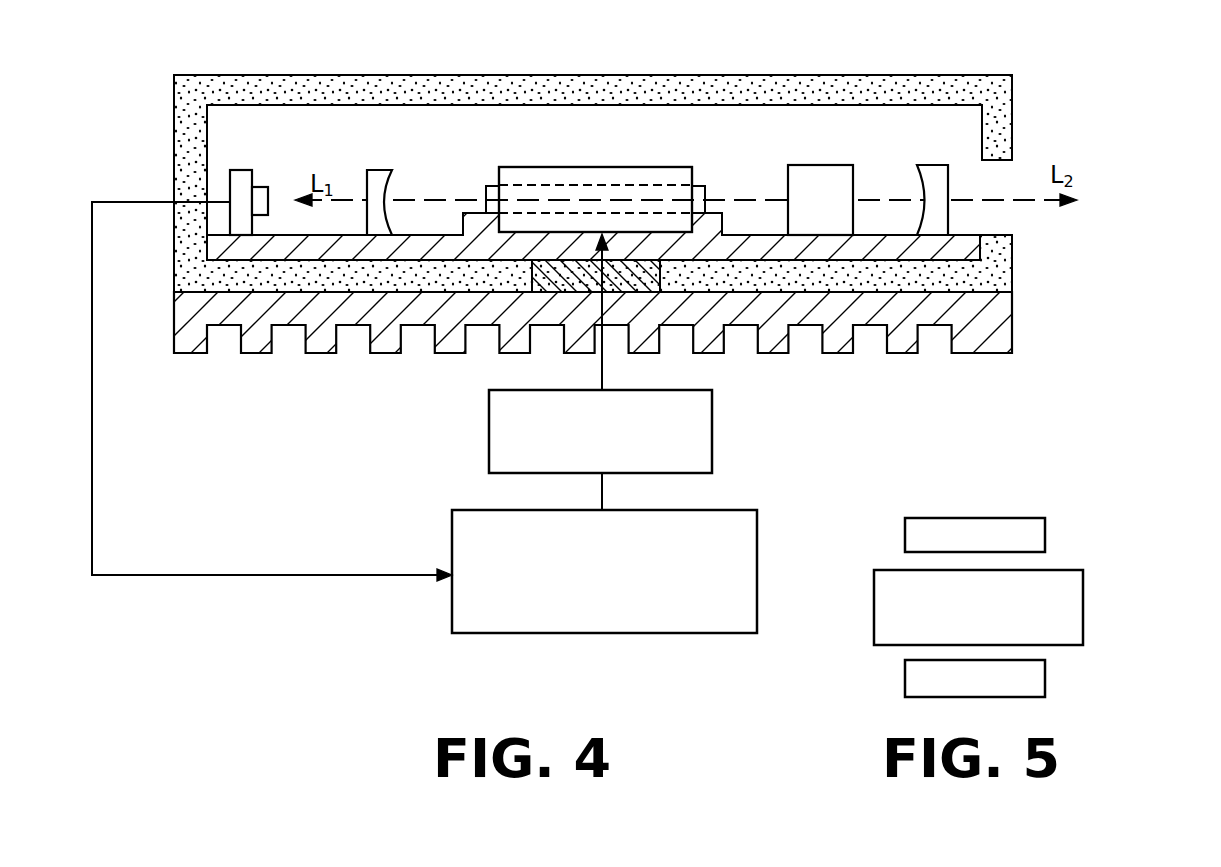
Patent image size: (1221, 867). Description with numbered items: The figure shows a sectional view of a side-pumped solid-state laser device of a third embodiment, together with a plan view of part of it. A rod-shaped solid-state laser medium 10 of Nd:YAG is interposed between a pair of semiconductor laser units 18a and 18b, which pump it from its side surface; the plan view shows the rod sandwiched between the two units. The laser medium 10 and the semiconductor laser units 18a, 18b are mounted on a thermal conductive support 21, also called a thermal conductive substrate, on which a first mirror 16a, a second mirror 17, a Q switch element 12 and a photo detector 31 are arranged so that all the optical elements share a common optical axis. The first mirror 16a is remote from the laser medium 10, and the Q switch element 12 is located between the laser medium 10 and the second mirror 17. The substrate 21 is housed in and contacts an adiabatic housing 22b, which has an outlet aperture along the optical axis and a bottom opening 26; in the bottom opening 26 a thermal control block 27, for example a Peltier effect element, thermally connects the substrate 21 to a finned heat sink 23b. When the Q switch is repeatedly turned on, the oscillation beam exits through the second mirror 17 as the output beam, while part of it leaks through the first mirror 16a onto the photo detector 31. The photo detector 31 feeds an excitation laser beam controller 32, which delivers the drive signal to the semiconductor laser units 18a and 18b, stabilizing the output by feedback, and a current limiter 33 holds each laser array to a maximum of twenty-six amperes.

In FIG. 4, the solid-state laser medium 10 is at (706, 192).
In FIG. 5, the solid-state laser medium 10 is at (1064, 601).
In FIG. 4, the Q switch element 12 is at (822, 176).
In FIG. 4, the first mirror 16a is at (380, 180).
In FIG. 4, the second mirror 17 is at (932, 174).
In FIG. 4, the semiconductor laser unit 18a is at (620, 183).
In FIG. 5, the semiconductor laser unit 18a is at (1034, 536).
In FIG. 5, the semiconductor laser unit 18b is at (1028, 681).
In FIG. 4, the thermal conductive support 21 is at (835, 243).
In FIG. 4, the adiabatic housing 22b is at (576, 82).
In FIG. 4, the heat sink 23b is at (987, 355).
In FIG. 4, the bottom opening 26 is at (532, 283).
In FIG. 4, the thermal control block 27 is at (655, 283).
In FIG. 4, the photo detector 31 is at (241, 180).
In FIG. 4, the excitation laser beam controller 32 is at (602, 633).
In FIG. 4, the current limiter 33 is at (712, 414).